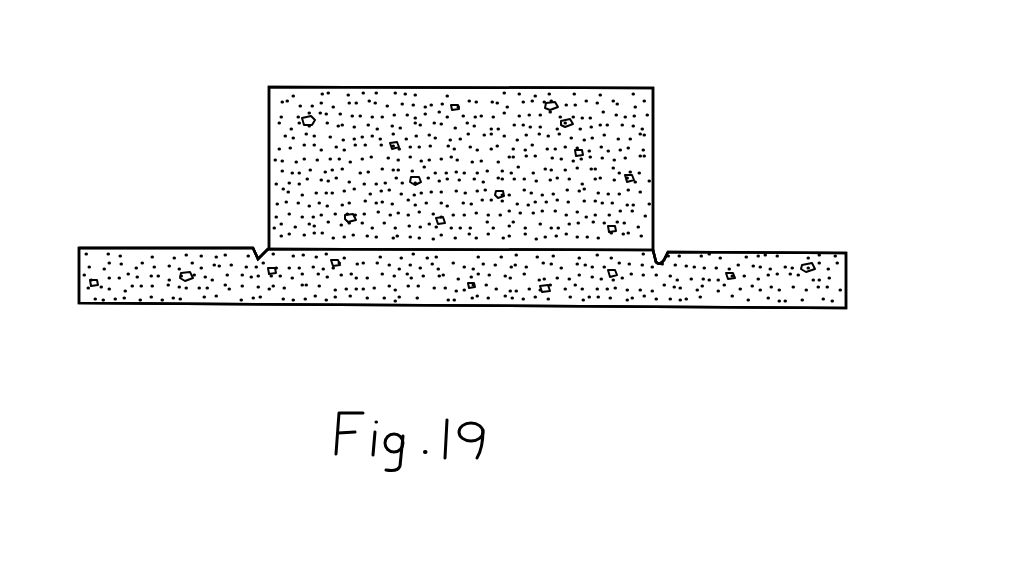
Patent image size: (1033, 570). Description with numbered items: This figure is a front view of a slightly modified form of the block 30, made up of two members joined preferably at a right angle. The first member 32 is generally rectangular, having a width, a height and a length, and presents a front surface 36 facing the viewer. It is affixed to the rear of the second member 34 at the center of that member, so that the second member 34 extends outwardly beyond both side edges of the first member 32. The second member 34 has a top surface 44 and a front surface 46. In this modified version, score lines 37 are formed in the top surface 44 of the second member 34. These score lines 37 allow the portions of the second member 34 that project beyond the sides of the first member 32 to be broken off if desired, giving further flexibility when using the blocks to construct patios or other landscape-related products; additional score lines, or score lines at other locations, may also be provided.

The composite structure 30 is at (474, 164).
The first member 32 is at (376, 110).
The second member 34 is at (181, 263).
The front surface 36 is at (605, 118).
The score lines 37 is at (258, 250).
The top surface 44 is at (131, 247).
The front surface 46 is at (822, 285).